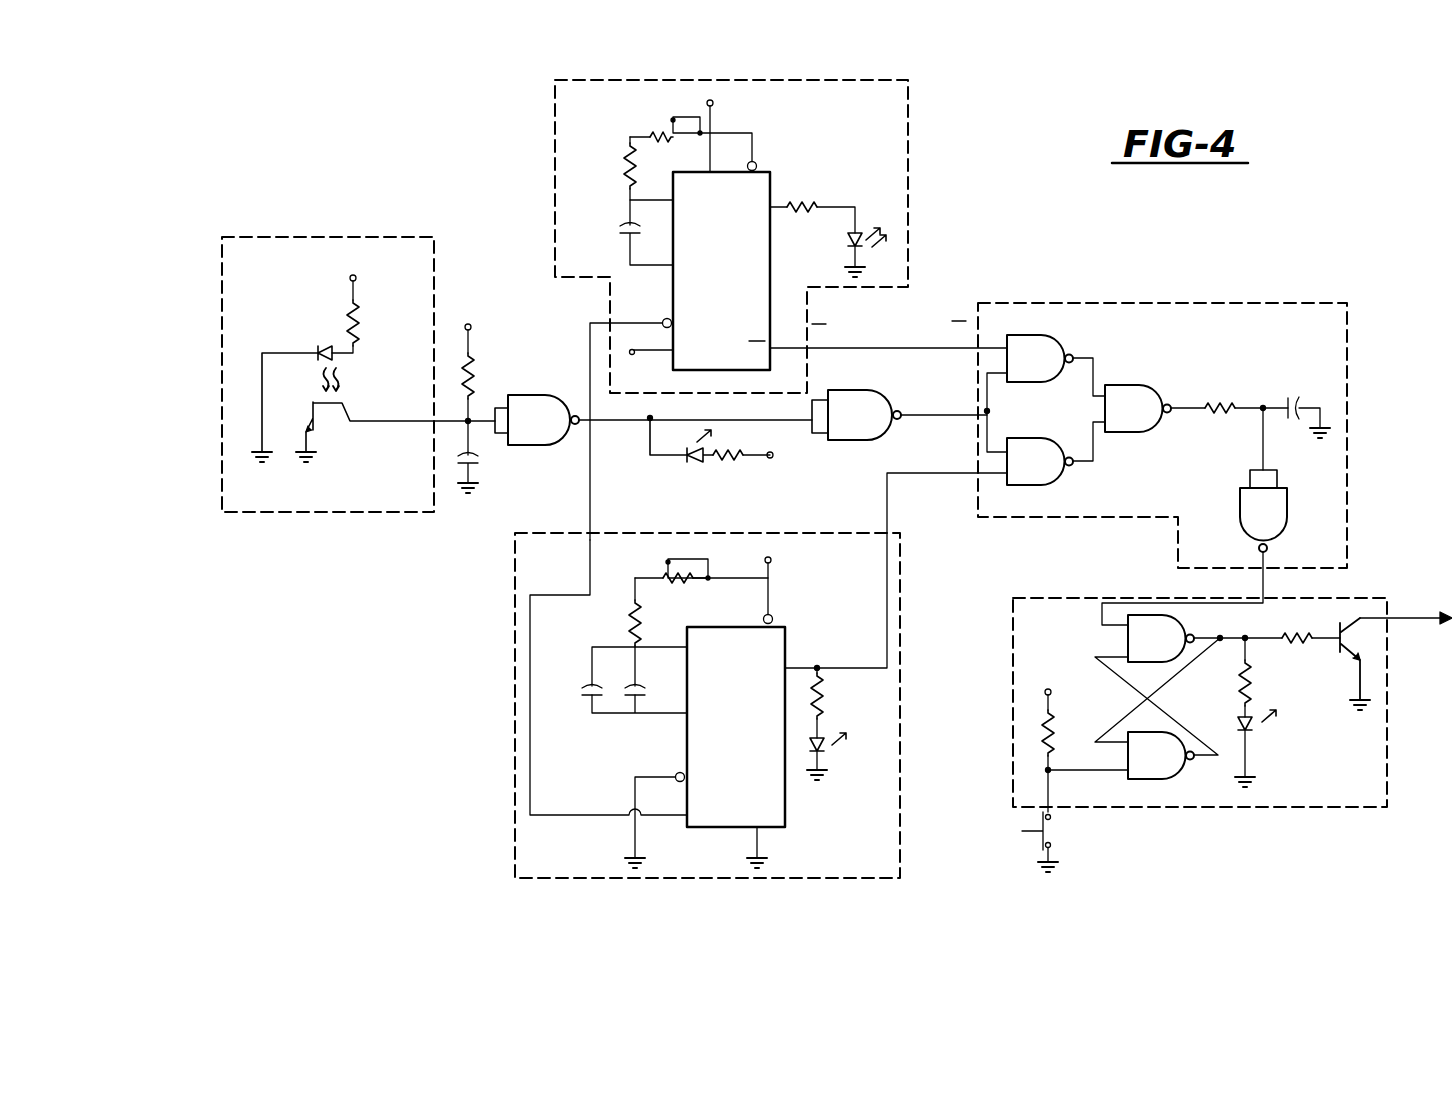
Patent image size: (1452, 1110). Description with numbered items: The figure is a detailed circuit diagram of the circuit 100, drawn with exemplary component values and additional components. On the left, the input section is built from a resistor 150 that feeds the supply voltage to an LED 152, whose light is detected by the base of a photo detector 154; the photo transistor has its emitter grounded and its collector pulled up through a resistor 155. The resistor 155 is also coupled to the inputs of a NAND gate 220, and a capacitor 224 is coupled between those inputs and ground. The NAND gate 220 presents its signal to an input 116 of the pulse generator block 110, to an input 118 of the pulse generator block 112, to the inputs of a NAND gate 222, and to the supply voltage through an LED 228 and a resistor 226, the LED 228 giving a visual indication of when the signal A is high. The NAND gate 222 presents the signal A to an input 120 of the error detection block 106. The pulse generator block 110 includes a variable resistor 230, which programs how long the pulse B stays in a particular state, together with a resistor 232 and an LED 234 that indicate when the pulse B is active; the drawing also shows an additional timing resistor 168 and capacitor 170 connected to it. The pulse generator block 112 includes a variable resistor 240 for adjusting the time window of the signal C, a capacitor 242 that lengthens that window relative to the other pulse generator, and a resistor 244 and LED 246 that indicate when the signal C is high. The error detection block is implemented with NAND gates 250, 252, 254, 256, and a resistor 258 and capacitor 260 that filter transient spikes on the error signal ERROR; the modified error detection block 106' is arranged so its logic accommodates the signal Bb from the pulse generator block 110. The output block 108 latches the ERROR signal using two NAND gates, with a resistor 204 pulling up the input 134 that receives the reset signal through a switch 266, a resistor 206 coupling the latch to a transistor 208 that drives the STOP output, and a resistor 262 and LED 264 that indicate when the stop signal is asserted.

The circuit 100 is at (447, 136).
The error detection block 106 is at (328, 408).
The modified error detection block 106' is at (1162, 399).
The output block 108 is at (1302, 810).
The pulse generator block 110 is at (908, 110).
The pulse generator block 112 is at (902, 828).
The input of the pulse generator block 116 is at (590, 328).
The input of the pulse generator block 118 is at (590, 540).
The input of the error detection block 120 is at (985, 406).
The input of the output section 134 is at (1052, 812).
The resistor 150 is at (350, 308).
The LED 152 is at (338, 357).
The photo detector 154 is at (312, 405).
The resistor 155 is at (470, 357).
The 4.7k resistor 168 is at (625, 170).
The 47 microfarad capacitor 170 is at (625, 235).
The resistor 204 is at (1043, 740).
The resistor 206 is at (1307, 642).
The transistor 208 is at (1360, 618).
The NAND gate 220 is at (560, 446).
The NAND gate 222 is at (885, 435).
The capacitor 224 is at (455, 465).
The resistor 226 is at (726, 470).
The LED 228 is at (692, 462).
The variable resistor 230 is at (650, 135).
The resistor 232 is at (812, 206).
The LED 234 is at (846, 248).
The variable resistor 240 is at (665, 574).
The capacitor 242 is at (583, 702).
The resistor 244 is at (818, 672).
The LED 246 is at (826, 752).
The NAND gate 250 is at (1048, 335).
The NAND gate 252 is at (1052, 486).
The NAND gate 254 is at (1140, 384).
The NAND gate 256 is at (1288, 516).
The resistor 258 is at (1237, 405).
The capacitor 260 is at (1300, 388).
The resistor 262 is at (1242, 688).
The LED 264 is at (1232, 738).
The switch 266 is at (1035, 838).